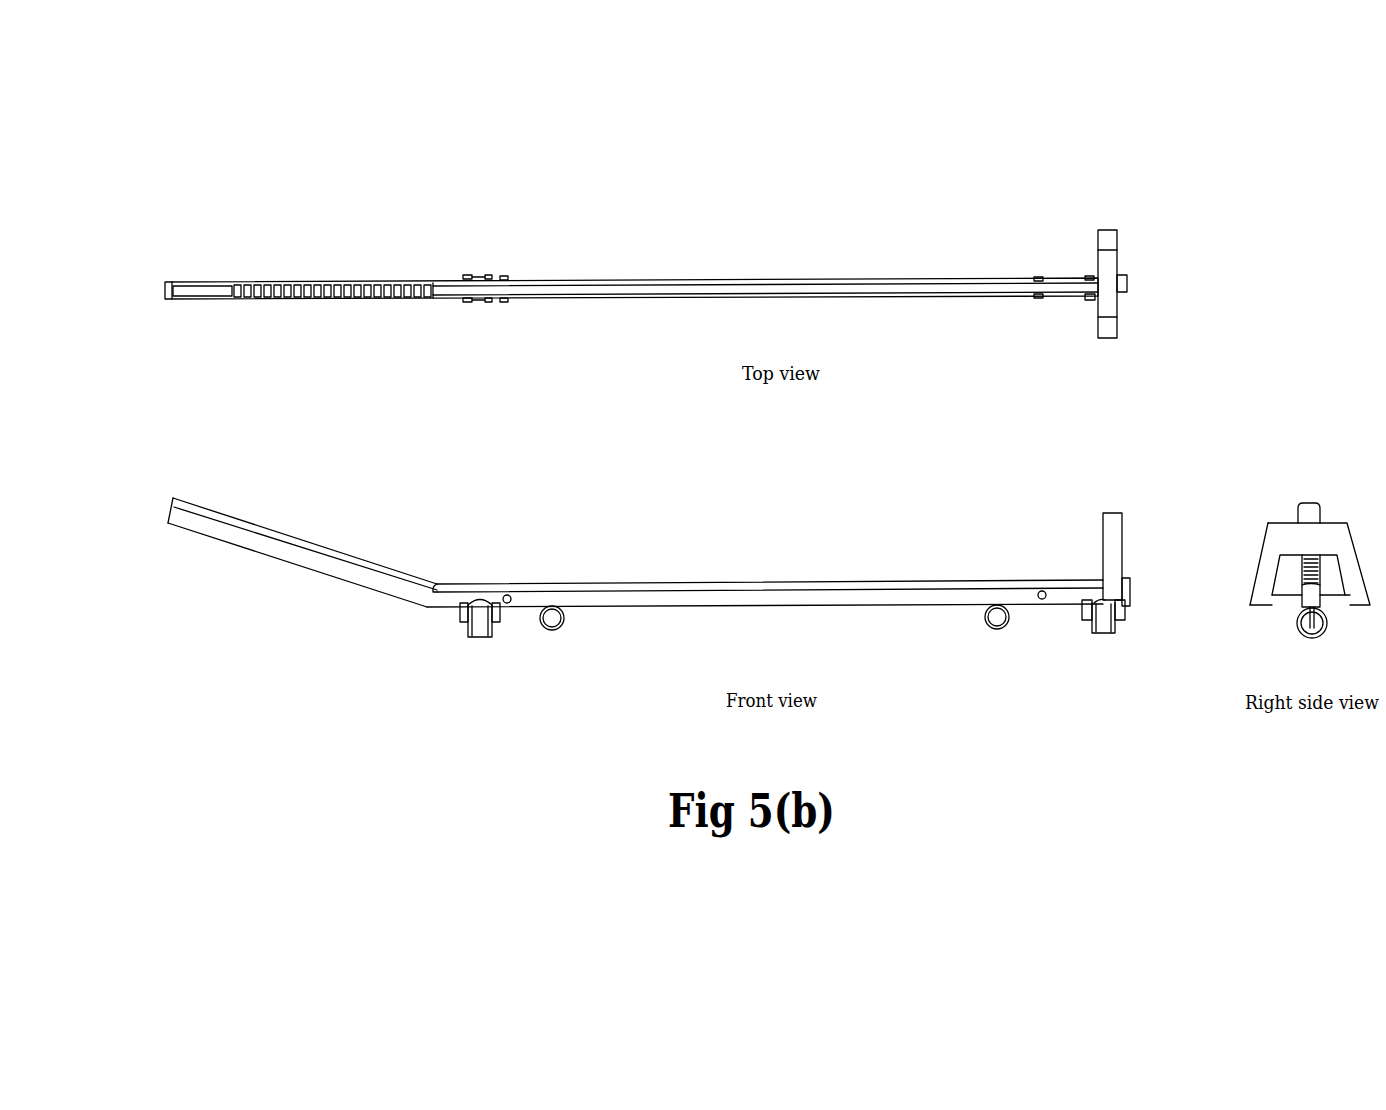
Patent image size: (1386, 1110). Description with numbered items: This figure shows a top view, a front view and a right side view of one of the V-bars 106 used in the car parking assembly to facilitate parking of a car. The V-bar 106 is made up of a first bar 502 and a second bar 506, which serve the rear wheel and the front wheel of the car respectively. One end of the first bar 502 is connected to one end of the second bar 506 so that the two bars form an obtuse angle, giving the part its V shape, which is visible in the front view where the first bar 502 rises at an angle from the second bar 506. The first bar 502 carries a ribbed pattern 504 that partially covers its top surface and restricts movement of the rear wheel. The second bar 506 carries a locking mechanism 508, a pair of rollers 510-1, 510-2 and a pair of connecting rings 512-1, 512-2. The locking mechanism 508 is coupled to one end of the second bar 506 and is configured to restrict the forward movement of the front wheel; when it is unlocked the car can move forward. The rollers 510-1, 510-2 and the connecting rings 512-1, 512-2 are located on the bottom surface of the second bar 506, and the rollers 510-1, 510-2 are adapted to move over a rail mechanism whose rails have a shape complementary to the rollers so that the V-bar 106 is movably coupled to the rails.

The V-bar 106 is at (258, 146).
The first bar 502 is at (196, 278).
The ribbed pattern 504 is at (315, 278).
The second bar 506 is at (774, 270).
The locking mechanism 508 is at (1106, 226).
The roller 510-1 is at (1092, 301).
The roller 510-2 is at (471, 304).
The connecting ring 512-1 is at (508, 305).
The connecting ring 512-2 is at (1038, 272).